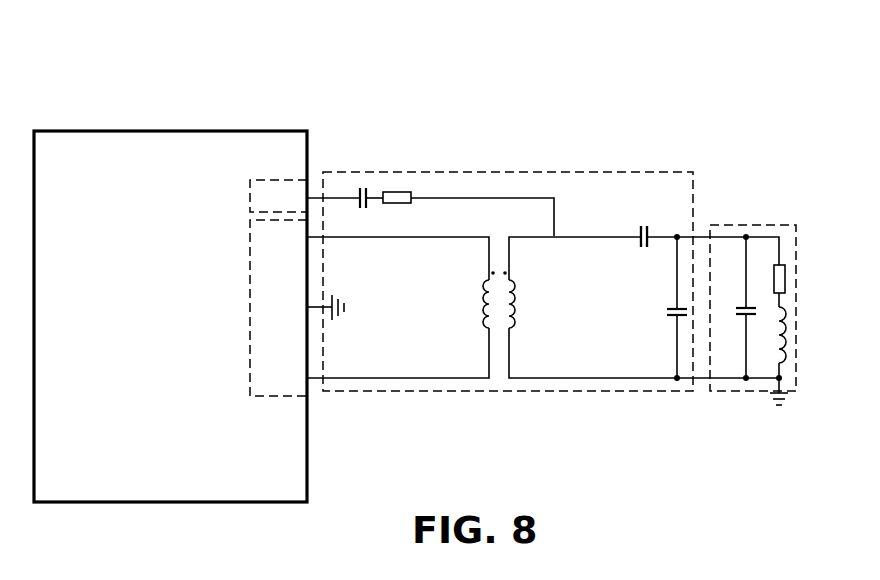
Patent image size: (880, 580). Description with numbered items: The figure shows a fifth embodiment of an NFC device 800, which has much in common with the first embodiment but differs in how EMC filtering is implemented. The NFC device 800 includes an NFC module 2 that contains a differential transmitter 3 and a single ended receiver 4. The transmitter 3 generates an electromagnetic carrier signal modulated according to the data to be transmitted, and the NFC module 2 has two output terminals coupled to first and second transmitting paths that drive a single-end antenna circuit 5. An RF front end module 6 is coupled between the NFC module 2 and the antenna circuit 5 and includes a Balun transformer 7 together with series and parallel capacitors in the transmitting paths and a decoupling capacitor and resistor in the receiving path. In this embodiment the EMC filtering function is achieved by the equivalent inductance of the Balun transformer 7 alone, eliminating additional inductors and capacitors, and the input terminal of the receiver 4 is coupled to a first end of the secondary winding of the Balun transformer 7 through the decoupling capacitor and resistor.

The NFC device 800 is at (493, 101).
The NFC module 2 is at (131, 122).
The differential transmitter 3 is at (242, 323).
The single ended receiver 4 is at (243, 173).
The antenna circuit 5 is at (751, 222).
The RF front end module 6 is at (553, 165).
The Balun transformer 7 is at (498, 250).